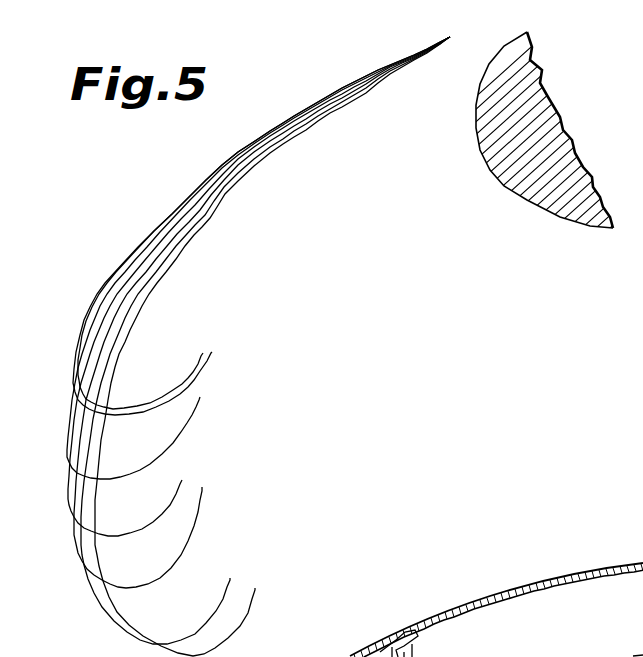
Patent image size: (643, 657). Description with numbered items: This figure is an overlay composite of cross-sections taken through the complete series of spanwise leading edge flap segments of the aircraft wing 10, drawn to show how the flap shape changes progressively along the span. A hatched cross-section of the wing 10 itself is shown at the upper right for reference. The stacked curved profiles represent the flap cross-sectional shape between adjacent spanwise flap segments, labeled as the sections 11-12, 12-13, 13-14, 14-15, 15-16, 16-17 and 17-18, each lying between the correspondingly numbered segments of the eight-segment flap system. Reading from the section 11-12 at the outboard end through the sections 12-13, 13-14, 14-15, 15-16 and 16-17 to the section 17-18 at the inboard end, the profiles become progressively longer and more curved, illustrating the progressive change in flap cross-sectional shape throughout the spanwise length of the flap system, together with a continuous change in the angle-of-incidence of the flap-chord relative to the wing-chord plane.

The aircraft wing 10 is at (503, 183).
The flap cross-section between spanwise flap segments 11 and 12 11-12 is at (140, 404).
The flap cross-section between spanwise flap segments 12 and 13 12-13 is at (195, 382).
The flap cross-section between spanwise flap segments 13 and 14 13-14 is at (177, 442).
The flap cross-section between spanwise flap segments 14 and 15 14-15 is at (174, 499).
The flap cross-section between spanwise flap segments 15 and 16 15-16 is at (192, 547).
The flap cross-section between spanwise flap segments 16 and 17 16-17 is at (227, 589).
The flap cross-section between spanwise flap segments 17 and 18 17-18 is at (247, 617).